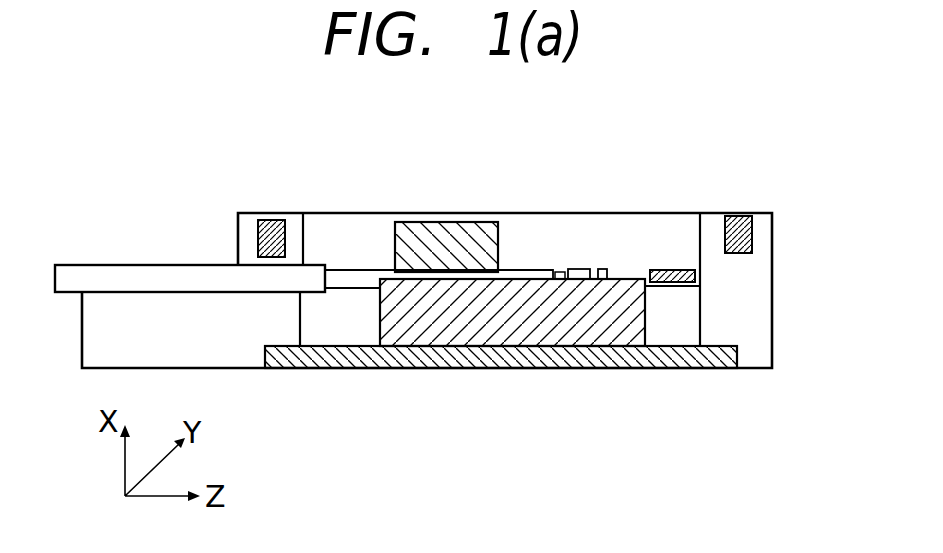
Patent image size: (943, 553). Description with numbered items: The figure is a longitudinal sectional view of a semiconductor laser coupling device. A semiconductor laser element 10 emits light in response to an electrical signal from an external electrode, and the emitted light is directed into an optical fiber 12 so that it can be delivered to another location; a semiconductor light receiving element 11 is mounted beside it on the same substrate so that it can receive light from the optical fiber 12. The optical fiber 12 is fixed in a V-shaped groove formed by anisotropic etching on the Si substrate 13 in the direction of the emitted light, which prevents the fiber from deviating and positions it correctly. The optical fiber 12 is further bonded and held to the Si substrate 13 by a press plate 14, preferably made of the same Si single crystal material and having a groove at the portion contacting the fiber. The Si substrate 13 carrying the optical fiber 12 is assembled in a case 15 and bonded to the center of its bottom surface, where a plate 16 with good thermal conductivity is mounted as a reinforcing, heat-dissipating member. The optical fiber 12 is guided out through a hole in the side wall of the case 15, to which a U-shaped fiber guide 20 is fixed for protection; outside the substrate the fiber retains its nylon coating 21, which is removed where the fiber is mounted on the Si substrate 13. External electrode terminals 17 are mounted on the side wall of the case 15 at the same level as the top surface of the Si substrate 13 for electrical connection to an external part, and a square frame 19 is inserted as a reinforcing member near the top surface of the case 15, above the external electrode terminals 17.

The semiconductor laser element 10 is at (579, 269).
The semiconductor light receiving element 11 is at (606, 269).
The optical fiber 12 is at (524, 270).
The Si substrate 13 is at (502, 330).
The press plate 14 is at (428, 222).
The case 15 is at (774, 313).
The plate 16 is at (332, 372).
The external electrode terminal 17 is at (668, 282).
The square frame 19 is at (270, 220).
The U-shaped fiber guide 20 is at (130, 302).
The nylon coating 21 is at (188, 270).